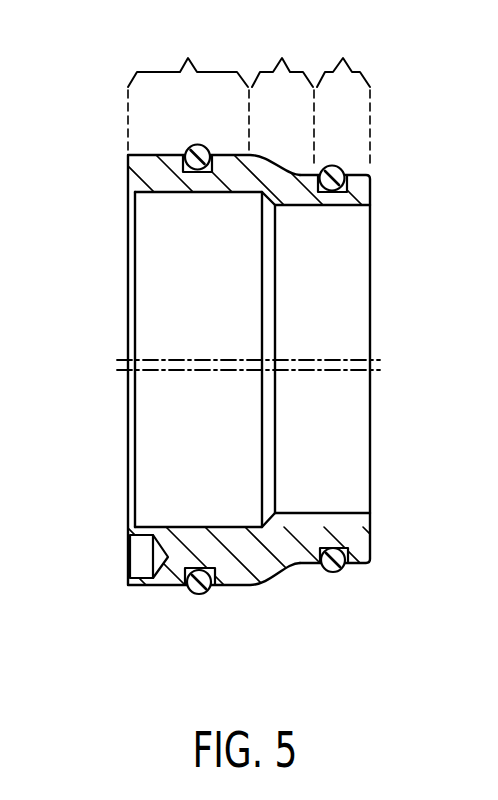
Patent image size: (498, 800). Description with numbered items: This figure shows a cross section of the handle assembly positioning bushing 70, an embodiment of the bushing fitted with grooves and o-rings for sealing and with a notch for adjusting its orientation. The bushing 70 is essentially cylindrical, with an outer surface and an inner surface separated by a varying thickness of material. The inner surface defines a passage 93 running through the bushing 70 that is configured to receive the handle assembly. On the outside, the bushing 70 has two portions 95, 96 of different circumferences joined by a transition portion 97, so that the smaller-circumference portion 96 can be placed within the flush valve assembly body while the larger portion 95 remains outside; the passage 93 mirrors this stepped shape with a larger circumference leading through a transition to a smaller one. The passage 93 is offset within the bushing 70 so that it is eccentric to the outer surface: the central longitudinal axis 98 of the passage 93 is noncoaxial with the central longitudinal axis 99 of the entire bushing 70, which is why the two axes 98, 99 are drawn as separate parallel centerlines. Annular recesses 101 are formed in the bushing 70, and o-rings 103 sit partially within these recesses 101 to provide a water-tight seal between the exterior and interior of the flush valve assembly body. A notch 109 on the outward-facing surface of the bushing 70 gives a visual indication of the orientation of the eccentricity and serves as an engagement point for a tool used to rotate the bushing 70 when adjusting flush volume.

The eccentric ring 70 is at (305, 634).
The passage 93 is at (353, 280).
The first portion 95 is at (188, 91).
The second portion 96 is at (343, 99).
The transition portion 97 is at (283, 96).
The central longitudinal axis of the passage 98 is at (302, 360).
The central longitudinal axis of the bushing 99 is at (287, 370).
The annular recesses 101 is at (325, 557).
The o-rings 103 is at (331, 166).
The notch 109 is at (128, 560).